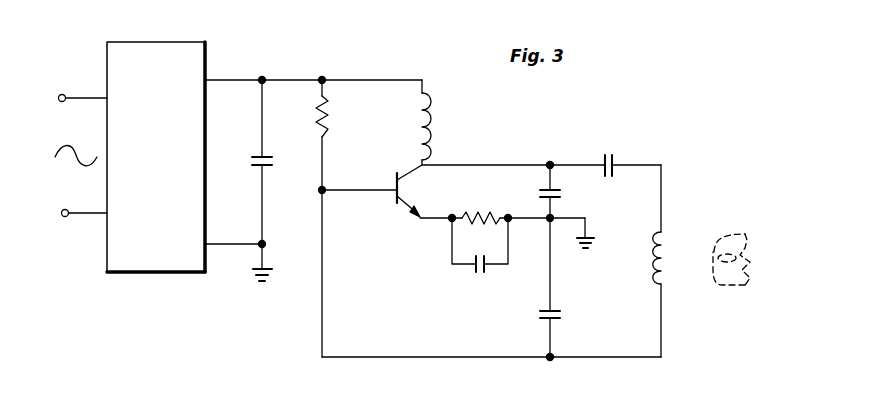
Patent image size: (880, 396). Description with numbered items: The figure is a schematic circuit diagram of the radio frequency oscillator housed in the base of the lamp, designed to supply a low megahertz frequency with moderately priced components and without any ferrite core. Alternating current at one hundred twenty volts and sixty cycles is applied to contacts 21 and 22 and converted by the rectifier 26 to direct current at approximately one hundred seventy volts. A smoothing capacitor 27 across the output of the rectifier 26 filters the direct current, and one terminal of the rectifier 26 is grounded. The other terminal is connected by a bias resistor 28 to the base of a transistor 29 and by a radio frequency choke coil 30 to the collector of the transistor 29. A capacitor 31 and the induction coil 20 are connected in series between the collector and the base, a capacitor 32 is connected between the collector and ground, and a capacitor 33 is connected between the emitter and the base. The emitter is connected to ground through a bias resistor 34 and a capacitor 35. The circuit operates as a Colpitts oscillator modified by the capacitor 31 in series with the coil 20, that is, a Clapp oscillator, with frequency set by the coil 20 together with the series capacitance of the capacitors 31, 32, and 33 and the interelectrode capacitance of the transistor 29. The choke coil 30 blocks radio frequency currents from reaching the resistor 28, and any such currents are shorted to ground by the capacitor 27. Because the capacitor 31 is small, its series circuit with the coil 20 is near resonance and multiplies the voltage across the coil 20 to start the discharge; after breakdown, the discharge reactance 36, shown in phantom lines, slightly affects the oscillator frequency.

The induction coil 20 is at (671, 286).
The contact 21 is at (66, 92).
The contact 22 is at (67, 217).
The rectifier 26 is at (163, 40).
The smoothing capacitor 27 is at (274, 161).
The bias resistor 28 is at (326, 121).
The transistor 29 is at (402, 190).
The radio frequency choke coil 30 is at (428, 127).
The capacitor 31 is at (614, 160).
The capacitor 32 is at (561, 195).
The capacitor 33 is at (540, 318).
The bias resistor 34 is at (486, 215).
The capacitor 35 is at (479, 270).
The reactance 36 is at (738, 289).